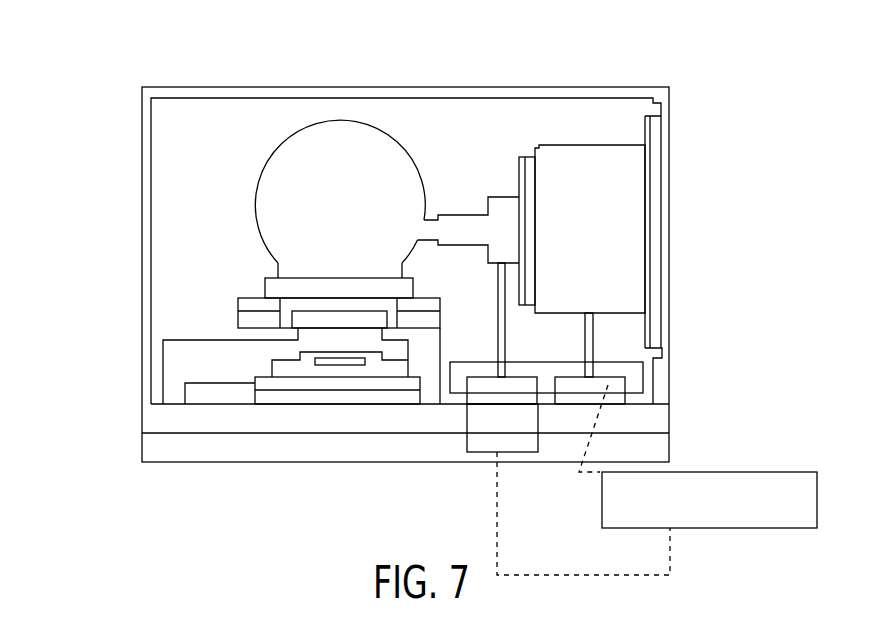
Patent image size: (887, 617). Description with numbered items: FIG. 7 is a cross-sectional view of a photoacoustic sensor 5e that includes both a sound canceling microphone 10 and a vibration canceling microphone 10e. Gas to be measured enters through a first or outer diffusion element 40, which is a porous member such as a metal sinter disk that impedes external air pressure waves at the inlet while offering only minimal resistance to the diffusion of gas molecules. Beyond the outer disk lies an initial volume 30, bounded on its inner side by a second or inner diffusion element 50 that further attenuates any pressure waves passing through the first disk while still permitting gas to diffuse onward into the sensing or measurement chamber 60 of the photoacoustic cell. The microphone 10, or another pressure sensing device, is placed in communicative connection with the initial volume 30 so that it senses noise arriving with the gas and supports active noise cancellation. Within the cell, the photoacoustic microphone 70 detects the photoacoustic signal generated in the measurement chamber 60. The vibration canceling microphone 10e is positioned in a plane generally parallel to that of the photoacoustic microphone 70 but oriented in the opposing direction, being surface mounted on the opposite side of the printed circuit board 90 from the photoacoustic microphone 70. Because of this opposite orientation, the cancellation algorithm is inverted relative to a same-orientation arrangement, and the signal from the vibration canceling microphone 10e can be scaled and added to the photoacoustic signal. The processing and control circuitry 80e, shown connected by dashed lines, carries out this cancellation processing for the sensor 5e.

The photoacoustic sensor 5e is at (664, 59).
The microphone 10 is at (577, 395).
The vibration canceling microphone 10e is at (467, 452).
The initial volume 30 is at (582, 147).
The first or outer diffusion element 40 is at (653, 223).
The second or inner diffusion element 50 is at (523, 157).
The sensing volume or measurement chamber 60 is at (268, 194).
The photoacoustic microphone 70 is at (483, 395).
The processing/control circuitry 80e is at (735, 472).
The printed circuit board 90 is at (152, 422).